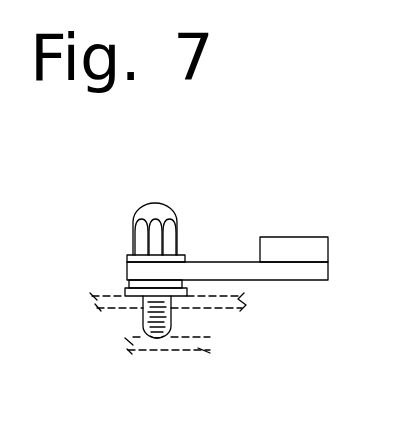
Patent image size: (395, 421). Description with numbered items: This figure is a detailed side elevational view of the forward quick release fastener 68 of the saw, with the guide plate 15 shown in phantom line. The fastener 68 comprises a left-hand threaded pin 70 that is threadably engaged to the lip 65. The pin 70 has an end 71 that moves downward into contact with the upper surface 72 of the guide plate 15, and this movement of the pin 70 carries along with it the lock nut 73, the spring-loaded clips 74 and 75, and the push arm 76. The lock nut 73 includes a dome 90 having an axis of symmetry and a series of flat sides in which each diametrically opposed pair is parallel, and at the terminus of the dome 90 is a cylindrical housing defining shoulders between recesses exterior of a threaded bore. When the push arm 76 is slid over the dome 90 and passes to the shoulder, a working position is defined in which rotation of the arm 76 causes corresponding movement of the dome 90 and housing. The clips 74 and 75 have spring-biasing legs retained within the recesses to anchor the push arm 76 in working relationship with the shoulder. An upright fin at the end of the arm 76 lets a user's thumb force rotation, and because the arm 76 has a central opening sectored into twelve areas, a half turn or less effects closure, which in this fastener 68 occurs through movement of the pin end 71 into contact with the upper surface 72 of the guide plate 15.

The guide plate 15 is at (219, 340).
The lip 65 is at (84, 296).
The quick release fastener 68 is at (256, 192).
The left-hand threaded pin 70 is at (140, 319).
The pin end 71 is at (150, 338).
The upper surface 72 is at (193, 335).
The lock nut 73 is at (168, 197).
The spring-loaded clip 74 is at (121, 254).
The spring-loaded clip 75 is at (126, 278).
The push arm 76 is at (297, 228).
The dome 90 is at (142, 205).